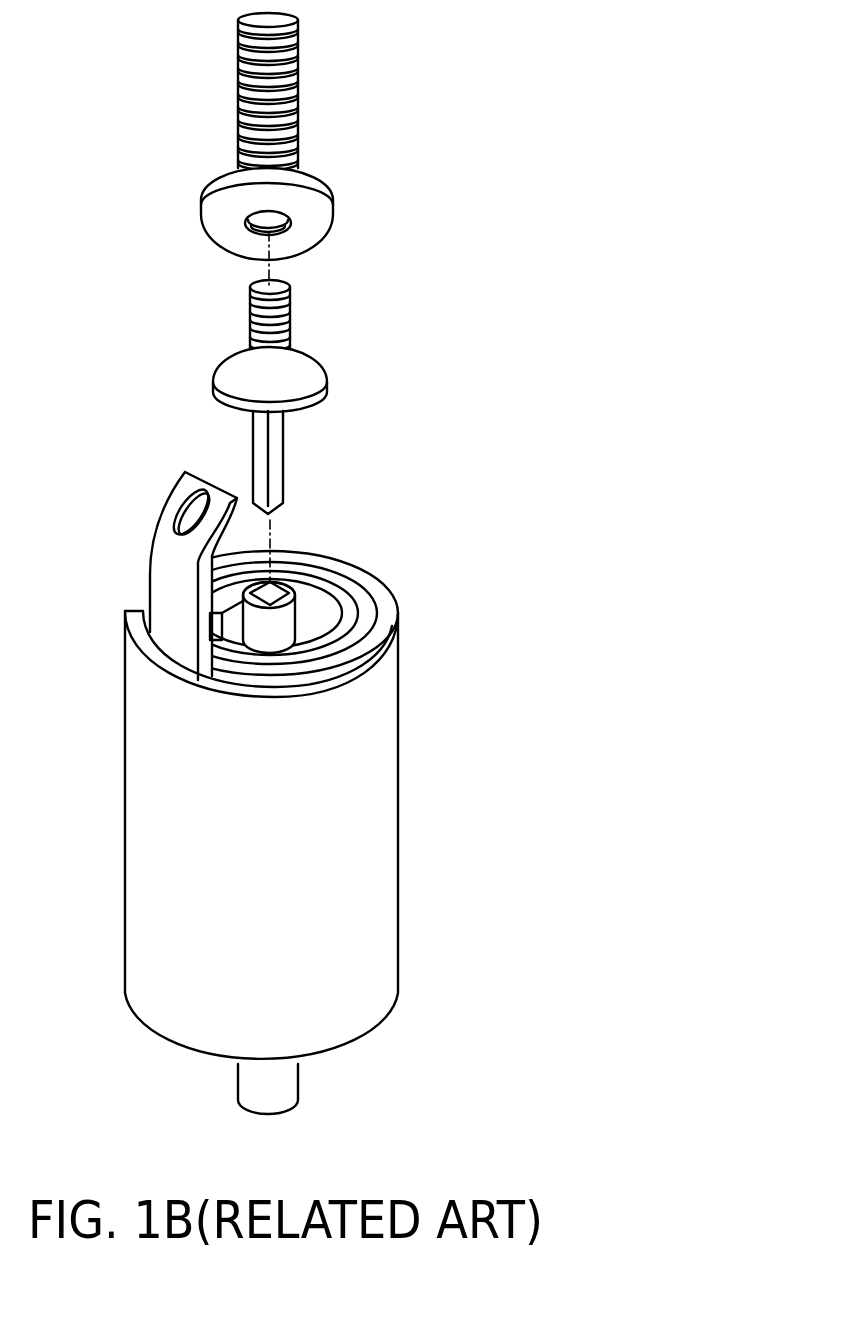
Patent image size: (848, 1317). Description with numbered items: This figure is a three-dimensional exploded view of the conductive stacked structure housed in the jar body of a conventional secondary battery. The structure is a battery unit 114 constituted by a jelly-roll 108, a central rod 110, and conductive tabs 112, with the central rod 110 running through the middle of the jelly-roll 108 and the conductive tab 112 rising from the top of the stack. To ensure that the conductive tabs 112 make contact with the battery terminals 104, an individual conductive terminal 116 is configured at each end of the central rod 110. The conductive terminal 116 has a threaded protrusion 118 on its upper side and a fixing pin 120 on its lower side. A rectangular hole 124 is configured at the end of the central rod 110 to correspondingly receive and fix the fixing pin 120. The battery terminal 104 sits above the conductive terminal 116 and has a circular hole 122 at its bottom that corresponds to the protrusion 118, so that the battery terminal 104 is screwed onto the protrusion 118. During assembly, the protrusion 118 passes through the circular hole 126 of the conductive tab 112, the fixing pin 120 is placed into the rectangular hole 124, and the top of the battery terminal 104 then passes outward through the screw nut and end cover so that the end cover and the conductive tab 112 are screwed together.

The battery terminal 104 is at (291, 30).
The circular hole 122 is at (285, 232).
The conductive terminal 116 is at (342, 397).
The protrusion 118 is at (292, 320).
The fixing pin 120 is at (331, 462).
The circular hole 126 is at (182, 510).
The battery unit 114 is at (343, 807).
The conductive tab 112 is at (213, 537).
The central rod 110 is at (287, 627).
The rectangular hole 124 is at (287, 588).
The jelly-roll 108 is at (313, 862).